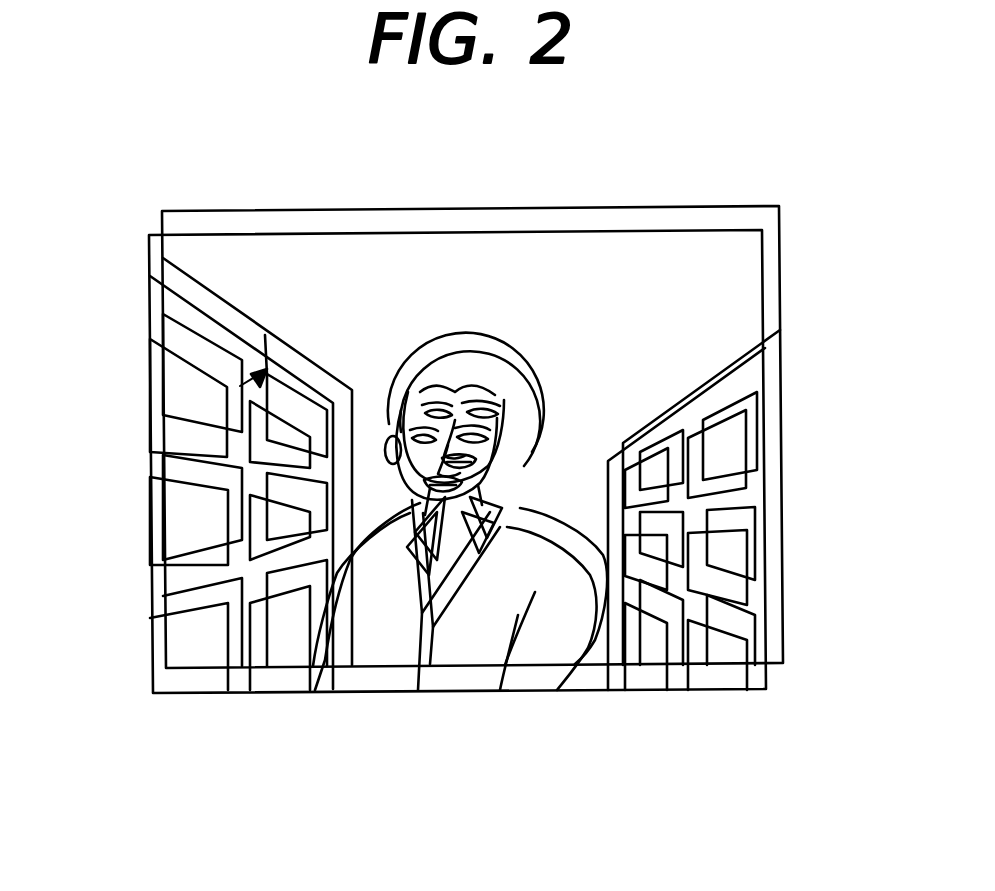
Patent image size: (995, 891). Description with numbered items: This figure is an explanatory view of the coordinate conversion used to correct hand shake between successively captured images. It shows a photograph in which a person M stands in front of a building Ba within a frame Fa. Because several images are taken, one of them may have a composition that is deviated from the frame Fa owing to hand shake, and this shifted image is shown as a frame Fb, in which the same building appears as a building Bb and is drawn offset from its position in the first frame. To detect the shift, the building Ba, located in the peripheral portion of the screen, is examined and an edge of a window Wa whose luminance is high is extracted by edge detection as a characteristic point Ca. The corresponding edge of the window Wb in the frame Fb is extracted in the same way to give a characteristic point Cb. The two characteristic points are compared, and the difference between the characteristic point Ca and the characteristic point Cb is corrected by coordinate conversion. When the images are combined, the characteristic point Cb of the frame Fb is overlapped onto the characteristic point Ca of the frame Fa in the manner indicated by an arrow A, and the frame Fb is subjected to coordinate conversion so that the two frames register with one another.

The frame Fa is at (784, 283).
The frame Fb is at (712, 690).
The window Wa is at (296, 403).
The window Wb is at (308, 486).
The building Ba is at (337, 405).
The building Bb is at (197, 312).
The characteristic point Ca is at (265, 335).
The characteristic point Cb is at (280, 440).
The arrow A is at (240, 386).
The person M is at (498, 332).